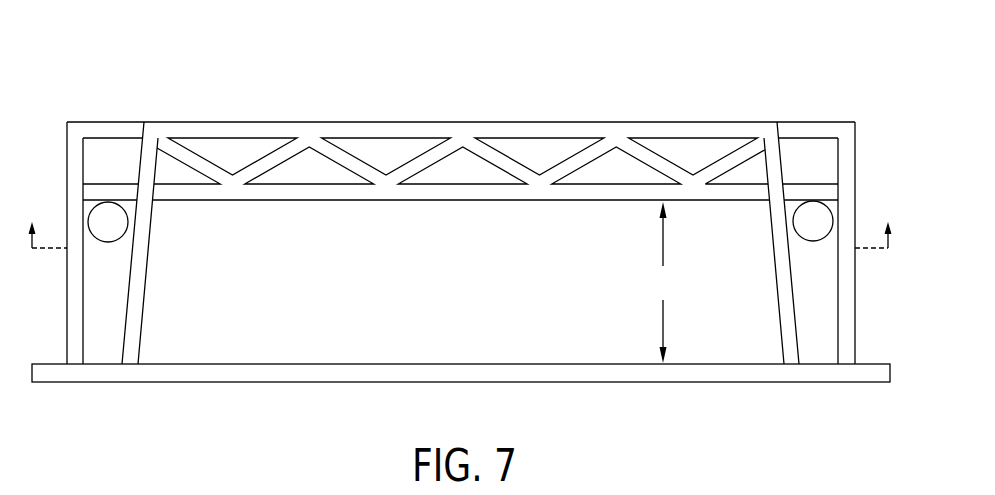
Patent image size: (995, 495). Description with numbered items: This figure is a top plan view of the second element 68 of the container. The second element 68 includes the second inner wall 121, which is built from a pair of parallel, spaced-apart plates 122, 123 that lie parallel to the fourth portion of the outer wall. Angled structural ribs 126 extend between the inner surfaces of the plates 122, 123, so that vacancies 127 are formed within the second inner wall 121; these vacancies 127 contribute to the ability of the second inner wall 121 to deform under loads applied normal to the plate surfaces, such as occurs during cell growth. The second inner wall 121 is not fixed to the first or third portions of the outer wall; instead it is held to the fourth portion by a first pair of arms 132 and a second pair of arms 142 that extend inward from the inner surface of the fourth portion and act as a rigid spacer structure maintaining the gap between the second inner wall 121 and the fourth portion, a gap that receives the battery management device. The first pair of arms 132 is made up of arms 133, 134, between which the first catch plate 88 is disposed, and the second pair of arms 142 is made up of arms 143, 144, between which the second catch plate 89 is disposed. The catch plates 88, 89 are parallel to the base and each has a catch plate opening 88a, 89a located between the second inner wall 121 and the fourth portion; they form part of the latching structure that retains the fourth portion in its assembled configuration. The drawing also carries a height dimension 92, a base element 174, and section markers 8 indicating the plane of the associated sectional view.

The second element 68 is at (158, 62).
The plate 122 is at (243, 128).
The second inner wall 121 is at (402, 128).
The vacancies 127 is at (540, 152).
The angled structural ribs 126 is at (732, 158).
The plate 123 is at (287, 193).
The second catch plate 89 is at (93, 307).
The catch plate opening 89a is at (97, 220).
The first catch plate 88 is at (825, 305).
The catch plate opening 88a is at (817, 210).
The arm 133 is at (847, 345).
The second pair of arms 142 is at (178, 314).
The arm 144 is at (133, 340).
The first pair of arms 132 is at (750, 326).
The arm 134 is at (788, 350).
The arm 143 is at (77, 353).
The base plate 174 is at (620, 374).
The interior height 92 is at (663, 282).
The section line 8- 8 is at (459, 219).